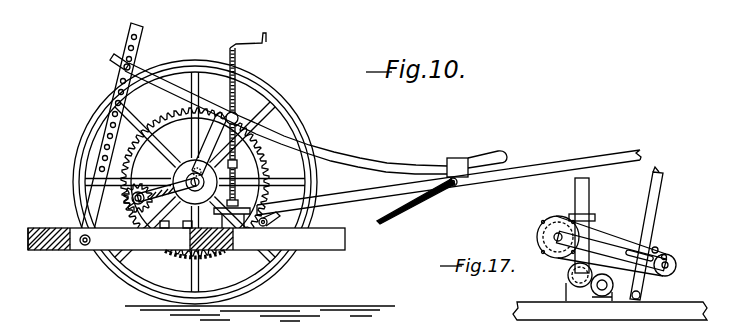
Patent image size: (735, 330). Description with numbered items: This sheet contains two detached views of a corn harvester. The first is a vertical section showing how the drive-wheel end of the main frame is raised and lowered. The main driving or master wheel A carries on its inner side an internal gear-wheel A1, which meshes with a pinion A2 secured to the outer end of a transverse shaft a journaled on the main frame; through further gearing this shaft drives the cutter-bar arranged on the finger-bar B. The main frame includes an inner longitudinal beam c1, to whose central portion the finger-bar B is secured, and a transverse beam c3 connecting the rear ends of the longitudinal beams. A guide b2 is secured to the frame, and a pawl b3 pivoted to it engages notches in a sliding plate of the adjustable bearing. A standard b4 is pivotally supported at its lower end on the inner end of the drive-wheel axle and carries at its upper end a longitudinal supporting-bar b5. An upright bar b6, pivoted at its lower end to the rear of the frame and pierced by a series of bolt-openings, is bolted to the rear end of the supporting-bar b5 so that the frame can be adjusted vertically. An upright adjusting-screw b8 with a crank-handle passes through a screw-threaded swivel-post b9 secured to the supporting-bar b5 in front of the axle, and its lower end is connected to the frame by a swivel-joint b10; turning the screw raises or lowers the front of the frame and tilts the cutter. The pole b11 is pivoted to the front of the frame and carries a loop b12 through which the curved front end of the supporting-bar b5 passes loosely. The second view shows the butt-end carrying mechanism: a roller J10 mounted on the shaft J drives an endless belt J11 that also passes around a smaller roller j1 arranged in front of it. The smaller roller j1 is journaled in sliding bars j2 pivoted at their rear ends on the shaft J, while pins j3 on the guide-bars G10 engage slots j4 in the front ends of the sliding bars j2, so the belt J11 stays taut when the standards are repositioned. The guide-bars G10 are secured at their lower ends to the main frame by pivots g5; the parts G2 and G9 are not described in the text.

In FIG. 10, the main driving or master wheel A is at (280, 100).
In FIG. 10, the internal gear-wheel A1 is at (183, 120).
In FIG. 10, the pinion A2 is at (143, 185).
In FIG. 10, the finger-bar B is at (229, 257).
In FIG. 10, the transverse shaft a is at (128, 207).
In FIG. 10, the guide b2 is at (112, 66).
In FIG. 10, the pawl b3 is at (166, 190).
In FIG. 10, the standard b4 is at (209, 144).
In FIG. 10, the supporting-bar b5 is at (340, 156).
In FIG. 10, the upright bar b6 is at (98, 166).
In FIG. 10, the adjusting-screw b8 is at (237, 165).
In FIG. 10, the swivel-post b9 is at (238, 114).
In FIG. 10, the swivel-joint b10 is at (240, 211).
In FIG. 10, the pole b11 is at (528, 165).
In FIG. 10, the loop b12 is at (459, 158).
In FIG. 10, the longitudinal beam c1 is at (186, 235).
In FIG. 10, the transverse beam c3 is at (46, 251).
In FIG. 17, the post G2 is at (590, 195).
In FIG. 17, the roller G9 is at (578, 288).
In FIG. 17, the guide-bar G10 is at (661, 181).
In FIG. 17, the pivot g5 is at (641, 295).
In FIG. 17, the shaft J is at (542, 236).
In FIG. 17, the roller J10 is at (553, 226).
In FIG. 17, the endless belt J11 is at (606, 247).
In FIG. 17, the smaller roller j1 is at (674, 262).
In FIG. 17, the sliding bar j2 is at (633, 248).
In FIG. 17, the pin j3 is at (657, 247).
In FIG. 17, the slot j4 is at (667, 256).